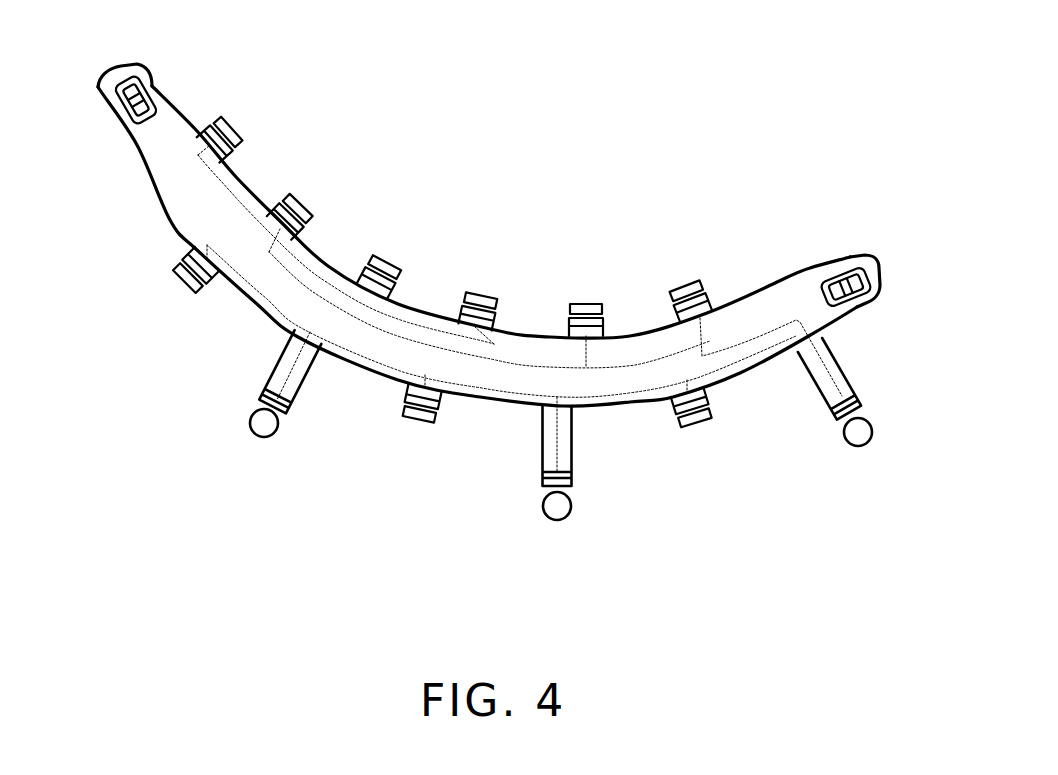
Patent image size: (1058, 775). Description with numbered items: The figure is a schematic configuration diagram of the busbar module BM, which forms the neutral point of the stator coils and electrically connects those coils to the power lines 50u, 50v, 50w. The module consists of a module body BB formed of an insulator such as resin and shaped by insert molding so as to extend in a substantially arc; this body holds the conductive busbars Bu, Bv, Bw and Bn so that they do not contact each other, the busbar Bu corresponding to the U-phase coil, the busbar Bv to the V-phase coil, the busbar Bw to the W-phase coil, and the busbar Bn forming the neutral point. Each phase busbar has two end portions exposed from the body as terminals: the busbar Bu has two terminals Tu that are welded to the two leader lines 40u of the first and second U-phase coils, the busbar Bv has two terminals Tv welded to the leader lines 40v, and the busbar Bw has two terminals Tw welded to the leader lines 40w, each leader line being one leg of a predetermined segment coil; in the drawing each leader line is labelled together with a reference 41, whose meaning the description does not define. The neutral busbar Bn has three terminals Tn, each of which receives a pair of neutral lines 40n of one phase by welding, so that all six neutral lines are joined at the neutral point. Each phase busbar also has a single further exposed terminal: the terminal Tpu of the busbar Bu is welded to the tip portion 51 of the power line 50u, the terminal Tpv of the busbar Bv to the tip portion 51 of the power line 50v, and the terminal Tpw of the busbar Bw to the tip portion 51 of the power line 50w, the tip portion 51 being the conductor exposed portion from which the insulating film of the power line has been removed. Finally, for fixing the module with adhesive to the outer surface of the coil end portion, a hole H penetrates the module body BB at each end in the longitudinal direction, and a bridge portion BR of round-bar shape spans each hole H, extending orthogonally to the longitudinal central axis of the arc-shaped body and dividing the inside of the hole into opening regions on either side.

The busbar module BM is at (148, 352).
The module body BB is at (136, 148).
The hole H is at (114, 80).
The bridge portion BR is at (148, 92).
The busbar Bu is at (196, 164).
The busbar Bv is at (392, 334).
The busbar Bw is at (800, 318).
The busbar Bn is at (617, 398).
The coil connection terminal 41 is at (506, 199).
The leader line 40u is at (238, 122).
The leader line 40v is at (300, 210).
The leader line 40w is at (386, 265).
The neutral line 40n is at (183, 270).
The end portion (terminal) Tu is at (213, 128).
The end portion (terminal) Tv is at (283, 215).
The end portion (terminal) Tw is at (358, 270).
The end portion (terminal) Tn is at (211, 283).
The end portion (terminal) Tpu is at (290, 401).
The end portion (terminal) Tpv is at (573, 481).
The end portion (terminal) Tpw is at (858, 404).
The tip portion 51 is at (561, 495).
The power line 50u is at (263, 436).
The power line 50v is at (557, 518).
The power line 50w is at (856, 444).